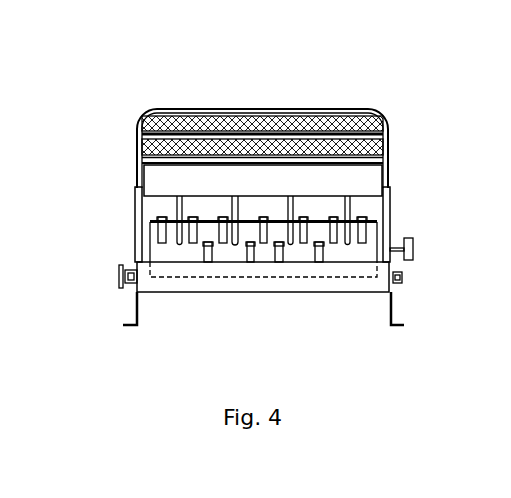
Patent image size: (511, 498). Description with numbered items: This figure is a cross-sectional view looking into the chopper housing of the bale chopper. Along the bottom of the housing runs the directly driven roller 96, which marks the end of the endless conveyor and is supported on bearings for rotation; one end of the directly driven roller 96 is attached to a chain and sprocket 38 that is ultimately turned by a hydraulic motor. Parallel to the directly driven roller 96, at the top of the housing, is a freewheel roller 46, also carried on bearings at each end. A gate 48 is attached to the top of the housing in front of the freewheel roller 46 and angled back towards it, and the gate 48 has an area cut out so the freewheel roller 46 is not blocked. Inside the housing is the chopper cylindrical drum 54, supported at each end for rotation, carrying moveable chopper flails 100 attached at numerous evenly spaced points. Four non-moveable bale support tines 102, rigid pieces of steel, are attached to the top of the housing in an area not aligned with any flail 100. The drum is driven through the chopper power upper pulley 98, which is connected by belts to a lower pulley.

The chain and sprocket 38 is at (122, 286).
The freewheel roller 46 is at (152, 178).
The gate 48 is at (207, 108).
The chopper cylindrical drum 54 is at (152, 224).
The directly driven roller 96 is at (212, 293).
The chopper power upper pulley 98 is at (412, 262).
The moveable chopper flail 100 is at (367, 230).
The non-moveable bale support tine 102 is at (182, 206).